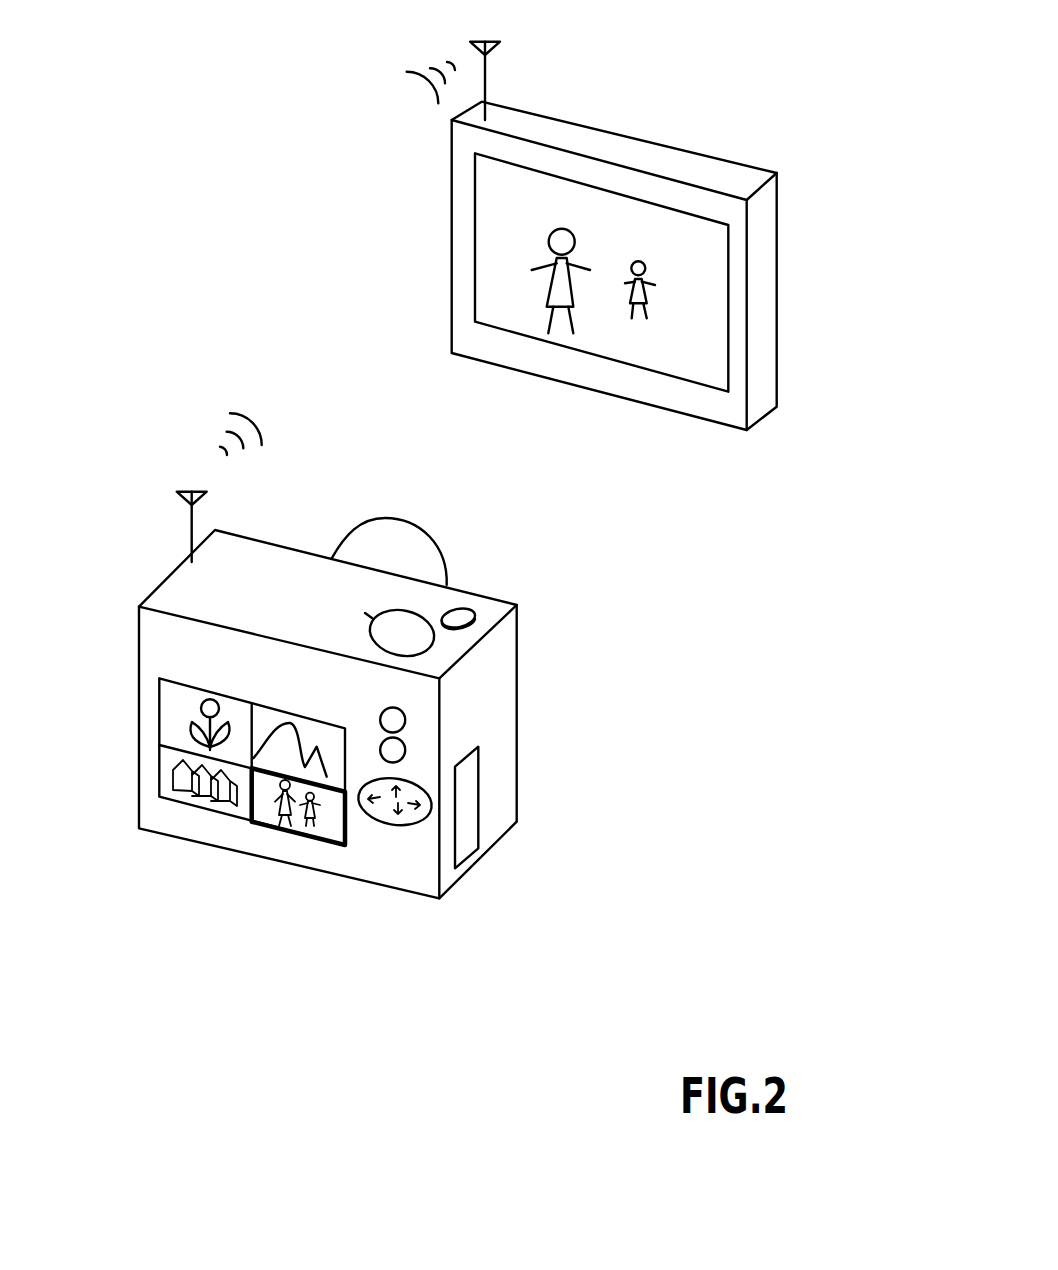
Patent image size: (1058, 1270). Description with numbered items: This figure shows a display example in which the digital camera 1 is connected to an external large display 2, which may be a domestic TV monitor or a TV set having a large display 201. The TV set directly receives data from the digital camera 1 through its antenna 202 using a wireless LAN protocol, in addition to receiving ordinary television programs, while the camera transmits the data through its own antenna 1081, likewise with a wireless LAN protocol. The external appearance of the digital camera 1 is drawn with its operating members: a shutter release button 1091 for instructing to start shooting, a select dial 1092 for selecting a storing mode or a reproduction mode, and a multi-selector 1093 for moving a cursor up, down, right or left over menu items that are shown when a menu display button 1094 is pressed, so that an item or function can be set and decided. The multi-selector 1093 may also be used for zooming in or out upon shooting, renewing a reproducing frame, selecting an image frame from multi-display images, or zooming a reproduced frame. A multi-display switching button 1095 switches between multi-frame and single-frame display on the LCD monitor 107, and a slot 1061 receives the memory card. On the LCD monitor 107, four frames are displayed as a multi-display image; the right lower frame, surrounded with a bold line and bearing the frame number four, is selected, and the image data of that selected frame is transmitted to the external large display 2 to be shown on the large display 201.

The digital camera 1 is at (280, 547).
The external large display 2 is at (728, 157).
The large display 201 is at (728, 303).
The antenna 202 is at (485, 88).
The LCD monitor 107 is at (187, 803).
The antenna 1081 is at (192, 532).
The shutter release button 1091 is at (472, 615).
The select dial 1092 is at (420, 617).
The multi-selector 1093 is at (382, 822).
The menu display button 1094 is at (405, 712).
The multi-display switching button 1095 is at (405, 747).
The slot 1061 is at (480, 813).